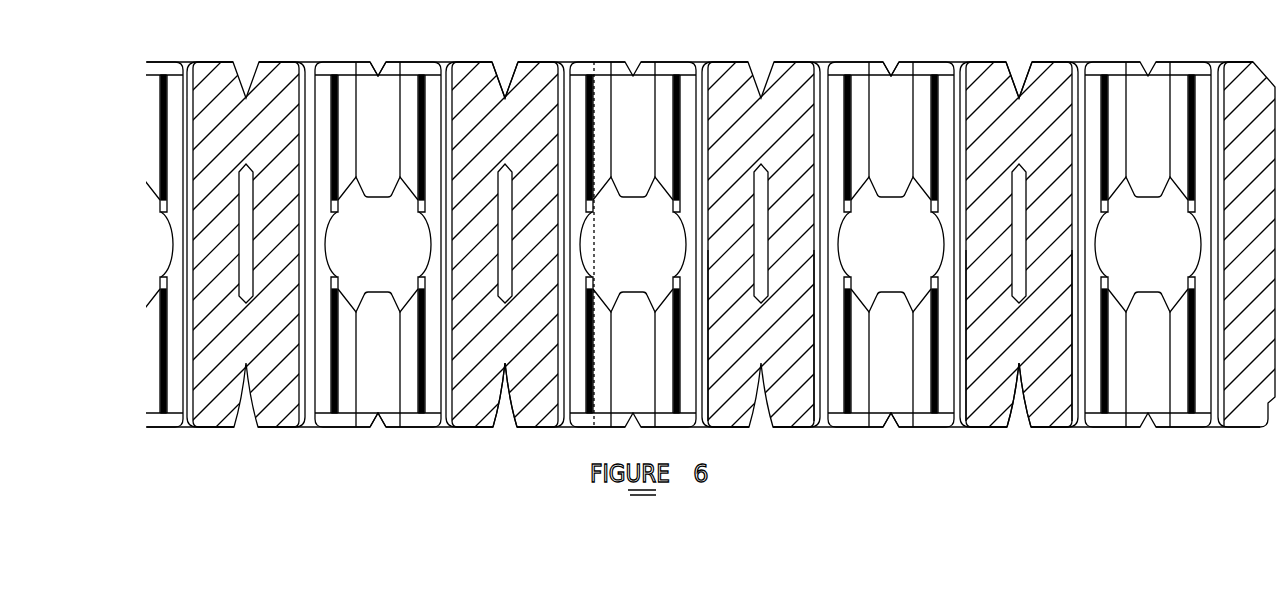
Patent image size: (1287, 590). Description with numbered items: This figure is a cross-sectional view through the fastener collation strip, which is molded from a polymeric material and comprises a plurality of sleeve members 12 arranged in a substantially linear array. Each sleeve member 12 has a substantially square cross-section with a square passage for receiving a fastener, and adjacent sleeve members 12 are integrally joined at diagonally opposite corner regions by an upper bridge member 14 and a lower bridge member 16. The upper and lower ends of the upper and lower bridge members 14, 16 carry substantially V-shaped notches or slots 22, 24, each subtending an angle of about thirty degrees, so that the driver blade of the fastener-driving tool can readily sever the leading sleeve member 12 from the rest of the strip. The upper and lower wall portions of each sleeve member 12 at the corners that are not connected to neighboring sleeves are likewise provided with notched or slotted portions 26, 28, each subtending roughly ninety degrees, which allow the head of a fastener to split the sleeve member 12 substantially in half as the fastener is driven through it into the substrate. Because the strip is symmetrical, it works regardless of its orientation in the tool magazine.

The sleeve member 12 is at (630, 8).
The upper bridge member 14 is at (763, 133).
The lower bridge member 16 is at (760, 333).
The V-shaped notch 22 is at (508, 78).
The V-shaped notch 24 is at (505, 395).
The notched portion 26 is at (380, 70).
The notched portion 28 is at (378, 413).